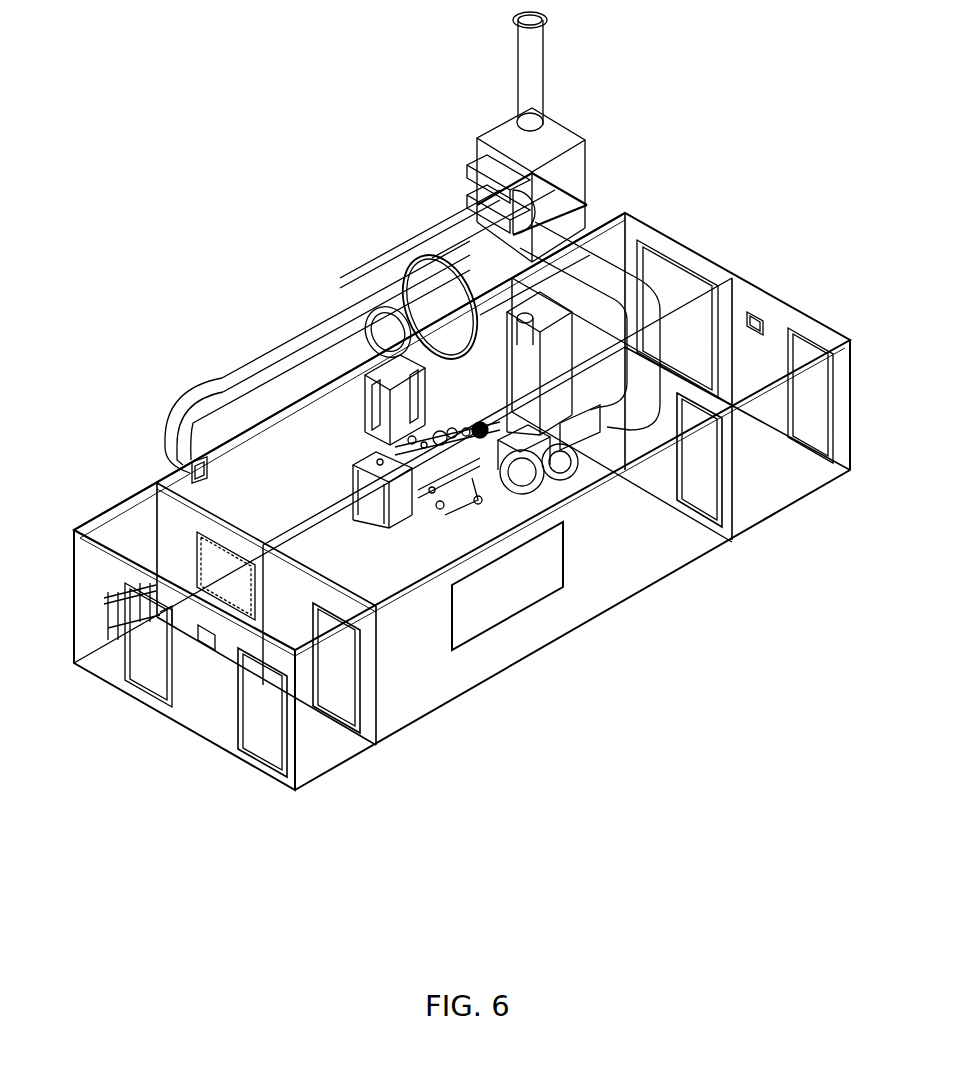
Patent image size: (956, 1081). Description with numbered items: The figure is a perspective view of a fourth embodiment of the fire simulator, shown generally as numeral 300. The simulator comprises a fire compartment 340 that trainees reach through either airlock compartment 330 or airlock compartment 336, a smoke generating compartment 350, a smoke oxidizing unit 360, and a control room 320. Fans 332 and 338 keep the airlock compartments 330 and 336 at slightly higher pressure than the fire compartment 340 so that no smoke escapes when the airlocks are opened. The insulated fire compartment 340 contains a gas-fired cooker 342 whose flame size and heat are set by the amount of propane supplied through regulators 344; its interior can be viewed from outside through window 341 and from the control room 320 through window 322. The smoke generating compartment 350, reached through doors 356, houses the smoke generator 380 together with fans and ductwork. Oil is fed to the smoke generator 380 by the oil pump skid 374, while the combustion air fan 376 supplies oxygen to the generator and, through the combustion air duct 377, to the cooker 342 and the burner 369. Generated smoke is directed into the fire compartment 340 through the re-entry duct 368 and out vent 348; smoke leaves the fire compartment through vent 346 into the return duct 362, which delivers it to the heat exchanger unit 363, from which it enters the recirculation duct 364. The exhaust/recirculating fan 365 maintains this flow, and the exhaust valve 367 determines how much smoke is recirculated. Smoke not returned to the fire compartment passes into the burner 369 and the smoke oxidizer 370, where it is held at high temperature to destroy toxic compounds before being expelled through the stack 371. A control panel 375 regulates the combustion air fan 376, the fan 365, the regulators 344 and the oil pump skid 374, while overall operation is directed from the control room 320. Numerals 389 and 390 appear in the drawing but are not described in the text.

The fire simulator 300 is at (150, 275).
The control room 320 is at (108, 530).
The window 322 is at (112, 490).
The airlock compartment 330 is at (320, 742).
The fan 332 is at (205, 638).
The airlock compartment 336 is at (757, 472).
The fan 338 is at (767, 315).
The fire compartment 340 is at (372, 598).
The window 341 is at (503, 623).
The cooker 342 is at (353, 473).
The regulators 344 is at (440, 505).
The vent 346 is at (160, 440).
The vent 348 is at (380, 403).
The smoke generating compartment 350 is at (600, 300).
The doors 356 is at (700, 282).
The smoke oxidizing unit 360 is at (556, 135).
The return duct 362 is at (290, 336).
The heat exchanger unit 363 is at (575, 135).
The recirculation duct 364 is at (640, 263).
The exhaust/recirculating fan 365 is at (587, 473).
The exhaust valve 367 is at (420, 258).
The re-entry duct 368 is at (410, 367).
The burner 369 is at (423, 288).
The smoke oxidizer 370 is at (483, 268).
The stack 371 is at (545, 33).
The oil pump skid 374 is at (508, 462).
The control panel 375 is at (762, 468).
The combustion air fan 376 is at (530, 470).
The combustion air duct 377 is at (478, 500).
The smoke generator 380 is at (407, 425).
The bearing 389 is at (380, 432).
The air duct 390 is at (290, 333).